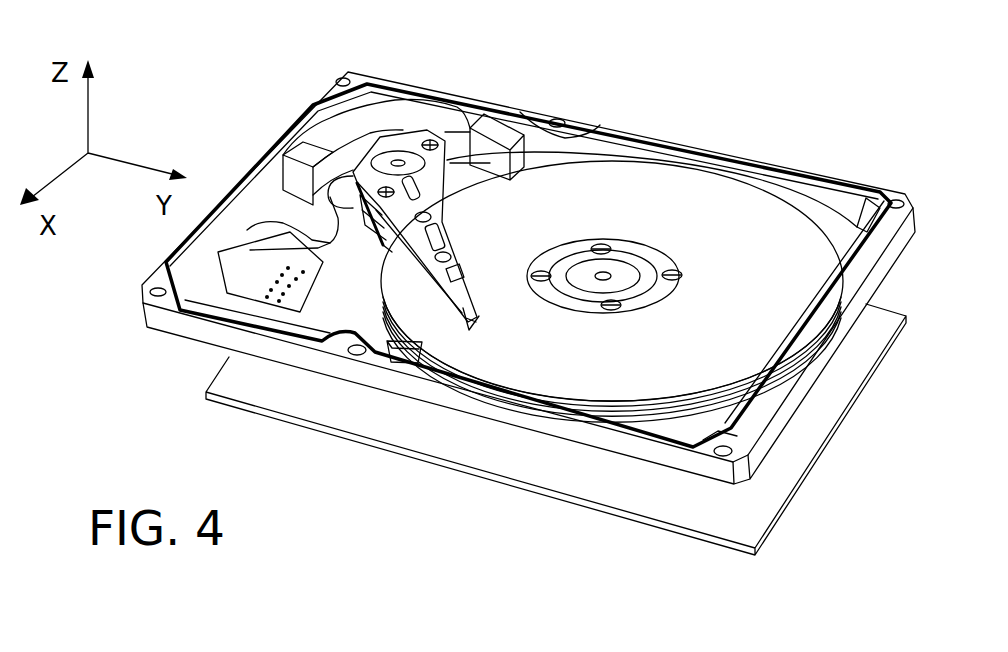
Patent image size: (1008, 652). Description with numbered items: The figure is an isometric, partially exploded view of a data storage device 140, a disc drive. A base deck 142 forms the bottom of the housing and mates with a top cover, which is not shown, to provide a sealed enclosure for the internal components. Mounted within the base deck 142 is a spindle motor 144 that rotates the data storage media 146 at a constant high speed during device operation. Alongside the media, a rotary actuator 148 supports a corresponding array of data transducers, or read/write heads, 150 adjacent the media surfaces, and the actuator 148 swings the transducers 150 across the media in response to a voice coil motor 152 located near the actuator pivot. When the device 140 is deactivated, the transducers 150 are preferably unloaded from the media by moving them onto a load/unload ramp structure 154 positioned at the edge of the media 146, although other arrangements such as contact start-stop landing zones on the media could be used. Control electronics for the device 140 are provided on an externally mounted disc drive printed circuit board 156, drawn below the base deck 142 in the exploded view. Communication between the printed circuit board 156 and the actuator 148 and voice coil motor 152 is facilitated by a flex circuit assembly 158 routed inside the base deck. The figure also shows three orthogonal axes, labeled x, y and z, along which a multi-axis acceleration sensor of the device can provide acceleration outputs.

The data storage device 140 is at (752, 90).
The base deck 142 is at (818, 372).
The spindle motor 144 is at (622, 270).
The data storage media 146 is at (637, 408).
The rotary actuator 148 is at (440, 217).
The data transducers (read/write heads) 150 is at (477, 320).
The voice coil motor (VCM) 152 is at (378, 118).
The load/unload ramp structure 154 is at (403, 353).
The disc drive printed circuit board (PCB) 156 is at (713, 544).
The flex circuit assembly 158 is at (279, 222).